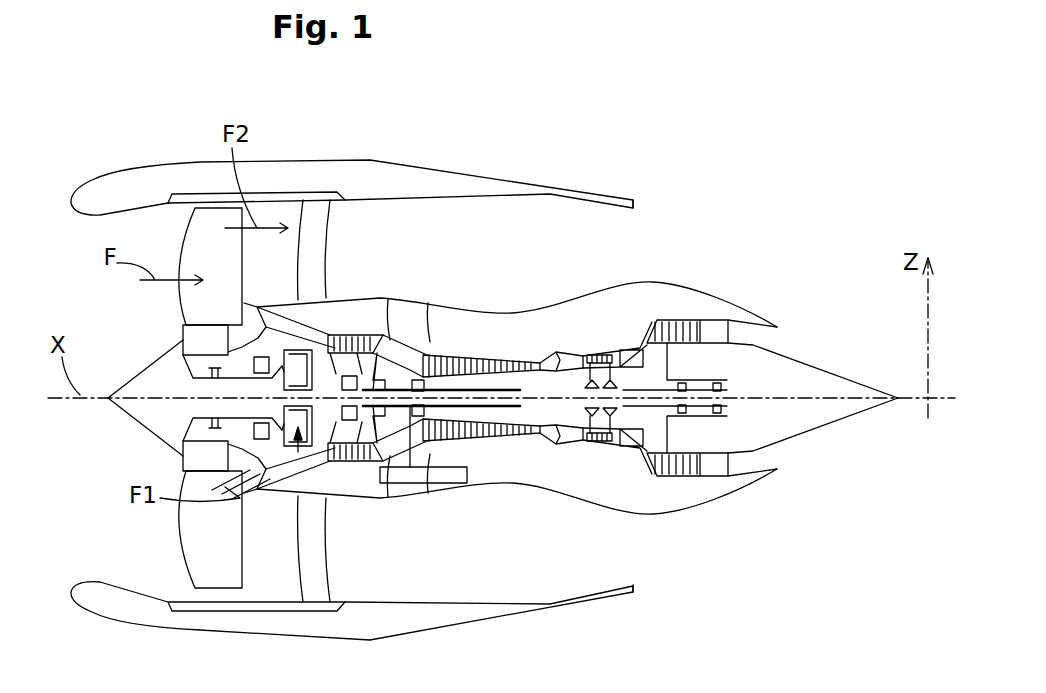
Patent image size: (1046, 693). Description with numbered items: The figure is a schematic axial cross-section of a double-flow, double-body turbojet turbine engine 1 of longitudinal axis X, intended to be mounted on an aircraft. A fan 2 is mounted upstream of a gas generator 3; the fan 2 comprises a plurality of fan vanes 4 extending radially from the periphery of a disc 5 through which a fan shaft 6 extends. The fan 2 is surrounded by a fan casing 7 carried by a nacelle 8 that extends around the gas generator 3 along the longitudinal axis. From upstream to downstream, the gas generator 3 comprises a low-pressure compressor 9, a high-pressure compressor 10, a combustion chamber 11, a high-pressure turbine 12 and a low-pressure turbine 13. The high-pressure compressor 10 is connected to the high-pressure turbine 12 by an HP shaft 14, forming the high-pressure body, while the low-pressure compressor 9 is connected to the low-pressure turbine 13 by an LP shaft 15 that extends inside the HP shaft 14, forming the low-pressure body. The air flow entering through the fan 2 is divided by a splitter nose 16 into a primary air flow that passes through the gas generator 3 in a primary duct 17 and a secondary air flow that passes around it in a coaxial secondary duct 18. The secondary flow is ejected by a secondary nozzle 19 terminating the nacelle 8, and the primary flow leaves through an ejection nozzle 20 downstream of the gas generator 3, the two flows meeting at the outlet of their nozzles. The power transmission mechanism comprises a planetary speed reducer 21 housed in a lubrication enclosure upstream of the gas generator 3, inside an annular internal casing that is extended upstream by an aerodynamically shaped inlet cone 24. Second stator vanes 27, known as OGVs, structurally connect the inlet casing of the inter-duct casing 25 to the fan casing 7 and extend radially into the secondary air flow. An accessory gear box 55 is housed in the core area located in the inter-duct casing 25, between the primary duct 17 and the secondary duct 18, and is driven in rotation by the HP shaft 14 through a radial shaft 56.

The turbine engine 1 is at (750, 193).
The fan 2 is at (122, 305).
The gas generator 3 is at (505, 512).
The fan vanes 4 is at (197, 540).
The disc 5 is at (193, 432).
The fan shaft 6 is at (193, 390).
The fan casing 7 is at (217, 200).
The nacelle 8 is at (173, 182).
The low-pressure compressor 9 is at (358, 458).
The high-pressure compressor 10 is at (497, 445).
The combustion chamber 11 is at (570, 345).
The high-pressure turbine 12 is at (603, 350).
The low-pressure turbine 13 is at (680, 318).
The HP shaft 14 is at (487, 340).
The LP shaft 15 is at (333, 475).
The splitter nose 16 is at (271, 318).
The primary duct 17 is at (312, 470).
The secondary duct 18 is at (493, 220).
The secondary nozzle 19 is at (618, 200).
The ejection nozzle 20 is at (745, 313).
The reducer 21 is at (300, 470).
The inlet cone 24 is at (100, 399).
The inter-duct casing 25 is at (447, 323).
The second stator vanes 27 is at (317, 215).
The accessory gear box 55 is at (453, 477).
The radial shaft 56 is at (417, 458).